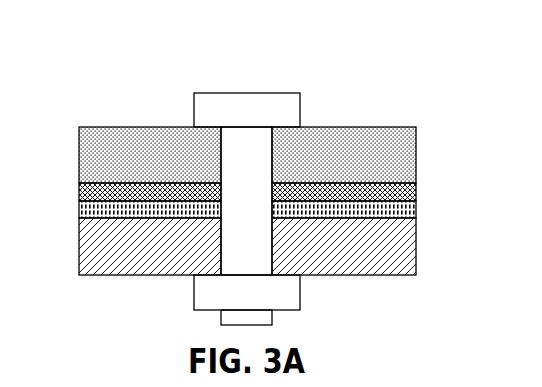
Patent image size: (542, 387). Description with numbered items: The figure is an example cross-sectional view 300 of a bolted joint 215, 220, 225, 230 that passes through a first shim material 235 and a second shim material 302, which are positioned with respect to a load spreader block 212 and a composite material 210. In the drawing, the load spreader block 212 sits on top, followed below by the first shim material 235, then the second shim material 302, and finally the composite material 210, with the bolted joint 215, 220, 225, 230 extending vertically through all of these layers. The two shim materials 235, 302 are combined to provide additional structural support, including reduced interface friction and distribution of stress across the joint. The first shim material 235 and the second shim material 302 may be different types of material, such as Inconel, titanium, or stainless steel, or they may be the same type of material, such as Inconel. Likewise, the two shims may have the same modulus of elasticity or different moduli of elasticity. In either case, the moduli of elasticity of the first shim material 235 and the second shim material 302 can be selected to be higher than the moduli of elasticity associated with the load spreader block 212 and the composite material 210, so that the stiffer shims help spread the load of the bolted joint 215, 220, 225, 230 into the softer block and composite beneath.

The cross-sectional view 300 is at (262, 169).
The bolted joint 215 is at (252, 92).
The bolted joint 220 is at (247, 110).
The bolted joint 225 is at (247, 110).
The bolted joint 230 is at (247, 110).
The load spreader block 212 is at (401, 127).
The first shim material 235 is at (416, 189).
The second shim material 302 is at (416, 211).
The composite material 210 is at (426, 247).